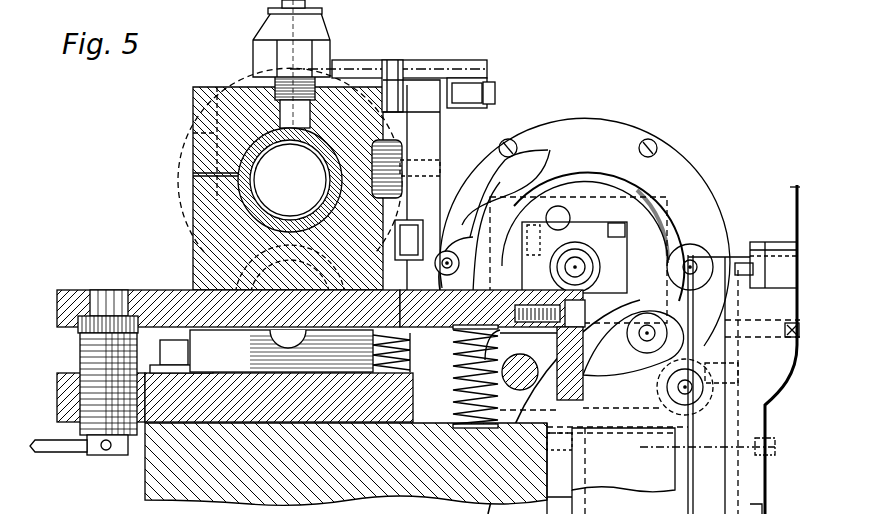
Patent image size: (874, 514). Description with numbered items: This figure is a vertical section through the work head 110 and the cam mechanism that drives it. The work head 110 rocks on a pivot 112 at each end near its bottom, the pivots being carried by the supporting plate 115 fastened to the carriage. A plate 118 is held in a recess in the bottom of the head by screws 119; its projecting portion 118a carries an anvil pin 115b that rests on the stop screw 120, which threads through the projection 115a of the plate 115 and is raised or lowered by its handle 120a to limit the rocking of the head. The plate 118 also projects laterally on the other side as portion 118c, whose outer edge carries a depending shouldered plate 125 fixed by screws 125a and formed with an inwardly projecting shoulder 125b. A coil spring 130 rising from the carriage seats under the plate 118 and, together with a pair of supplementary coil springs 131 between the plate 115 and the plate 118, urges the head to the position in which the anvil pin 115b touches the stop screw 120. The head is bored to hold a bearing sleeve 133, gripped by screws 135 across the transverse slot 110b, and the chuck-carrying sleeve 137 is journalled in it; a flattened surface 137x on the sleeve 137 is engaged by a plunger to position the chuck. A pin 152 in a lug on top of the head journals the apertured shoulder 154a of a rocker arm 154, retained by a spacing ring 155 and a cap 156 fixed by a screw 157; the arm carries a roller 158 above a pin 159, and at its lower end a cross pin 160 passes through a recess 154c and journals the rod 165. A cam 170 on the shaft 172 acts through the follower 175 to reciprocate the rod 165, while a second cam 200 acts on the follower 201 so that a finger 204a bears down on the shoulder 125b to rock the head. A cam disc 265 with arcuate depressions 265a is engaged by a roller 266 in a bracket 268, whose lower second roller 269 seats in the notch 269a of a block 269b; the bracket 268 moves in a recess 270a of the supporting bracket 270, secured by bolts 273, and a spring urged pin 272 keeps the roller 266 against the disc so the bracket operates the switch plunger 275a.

The work head 110 is at (185, 112).
The transverse slot 110b is at (195, 175).
The pivot 112 is at (270, 340).
The supporting plate 115 is at (410, 377).
The projection 115a is at (62, 400).
The anvil pin 115b is at (105, 290).
The plate 118 is at (160, 339).
The projecting portion 118a is at (160, 274).
The laterally projecting portion 118c is at (432, 290).
The screws 119 is at (185, 262).
The stop screw 120 is at (85, 349).
The handle 120a is at (66, 455).
The shouldered plate 125 is at (612, 393).
The screws 125a is at (576, 309).
The shoulder 125b is at (618, 377).
The coil spring 130 is at (452, 405).
The supplementary coil springs 131 is at (410, 353).
The bearing sleeve 133 is at (240, 155).
The screws 135 is at (222, 86).
The chuck-carrying sleeve 137 is at (280, 206).
The flattened surface 137x is at (300, 140).
The pin 152 is at (404, 70).
The rocker arm 154 is at (445, 143).
The apertured shoulder 154a is at (446, 74).
The recess 154c is at (413, 224).
The spacing ring 155 is at (382, 68).
The cap 156 is at (488, 104).
The screw 157 is at (494, 86).
The roller 158 is at (398, 145).
The pin 159 is at (440, 170).
The cross pin 160 is at (443, 254).
The rod 165 is at (413, 237).
The cam 170 is at (603, 217).
The shaft 172 is at (650, 205).
The follower 175 is at (472, 225).
The second cam 200 is at (623, 190).
The follower 201 is at (668, 330).
The finger 204a is at (562, 400).
The cam disc 265 is at (680, 220).
The depressions 265a is at (550, 162).
The roller 266 is at (688, 244).
The bracket 268 is at (752, 262).
The second roller 269 is at (748, 388).
The notch 269a is at (665, 418).
The block 269b is at (640, 425).
The supporting bracket 270 is at (752, 415).
The recess 270a is at (772, 371).
The spring urged pin 272 is at (763, 330).
The bolts 273 is at (768, 450).
The switch plunger 275a is at (788, 244).